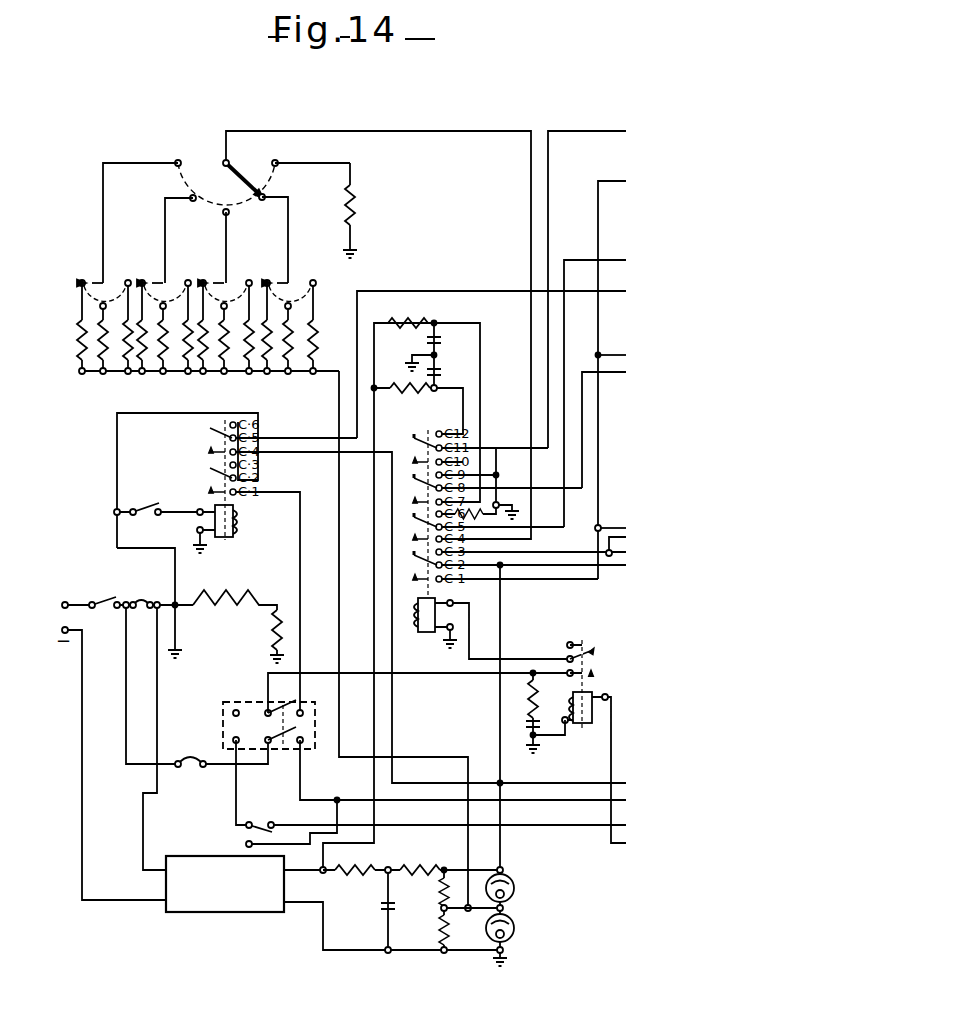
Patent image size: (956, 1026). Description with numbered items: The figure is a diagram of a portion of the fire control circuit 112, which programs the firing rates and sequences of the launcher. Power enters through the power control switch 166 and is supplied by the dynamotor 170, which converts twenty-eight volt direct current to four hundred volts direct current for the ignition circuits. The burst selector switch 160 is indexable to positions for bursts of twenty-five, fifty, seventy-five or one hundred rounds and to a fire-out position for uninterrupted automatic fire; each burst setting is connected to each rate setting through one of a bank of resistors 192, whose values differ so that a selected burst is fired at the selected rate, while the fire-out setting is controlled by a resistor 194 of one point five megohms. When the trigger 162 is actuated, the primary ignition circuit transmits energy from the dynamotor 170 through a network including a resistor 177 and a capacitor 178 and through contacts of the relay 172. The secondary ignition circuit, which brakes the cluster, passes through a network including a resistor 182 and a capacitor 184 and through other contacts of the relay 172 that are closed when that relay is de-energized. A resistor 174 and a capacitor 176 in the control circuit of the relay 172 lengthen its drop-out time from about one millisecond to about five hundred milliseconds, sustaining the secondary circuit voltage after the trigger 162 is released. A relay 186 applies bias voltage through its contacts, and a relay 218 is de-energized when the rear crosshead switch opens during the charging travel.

The fire control circuit 112 is at (382, 980).
The burst selector switch 160 is at (228, 160).
The trigger 162 is at (144, 510).
The power control switch 166 is at (102, 600).
The dynamotor 170 is at (238, 906).
The relay 172 is at (428, 630).
The resistor 174 is at (528, 695).
The capacitor 176 is at (530, 728).
The resistor 177 is at (414, 390).
The capacitor 178 is at (466, 370).
The resistor 182 is at (422, 317).
The capacitor 184 is at (440, 340).
The relay 186 is at (235, 518).
The bank of resistors 192 is at (74, 345).
The resistor 194 is at (356, 222).
The relay 218 is at (588, 725).